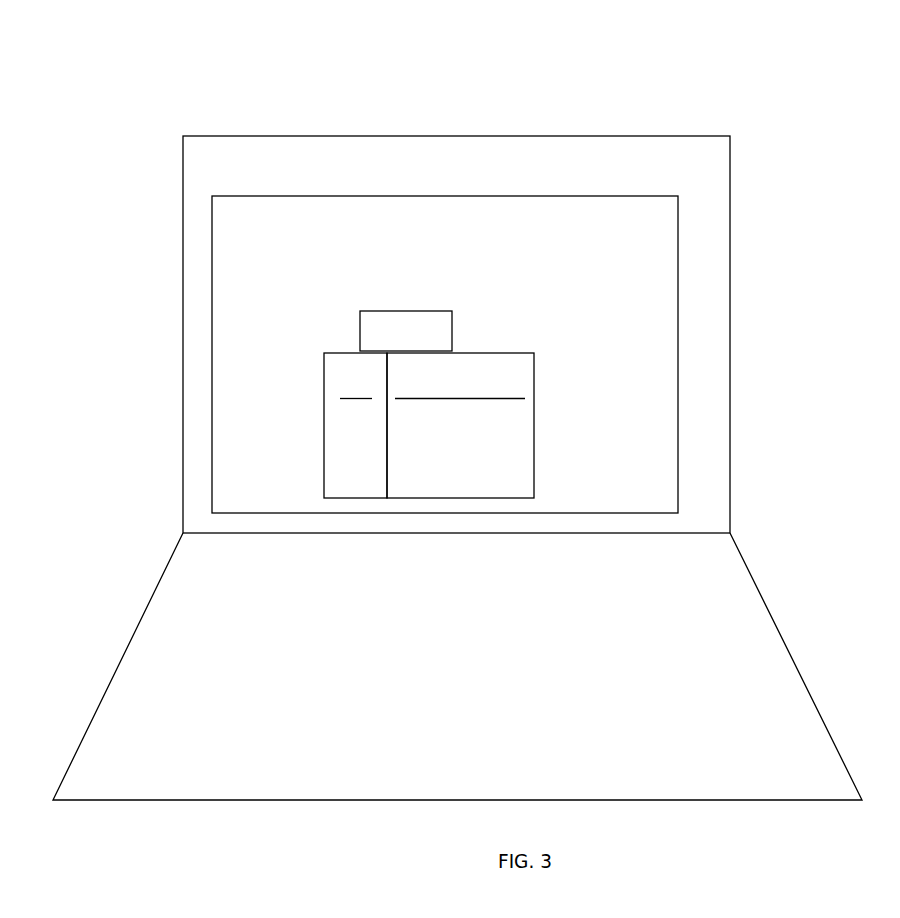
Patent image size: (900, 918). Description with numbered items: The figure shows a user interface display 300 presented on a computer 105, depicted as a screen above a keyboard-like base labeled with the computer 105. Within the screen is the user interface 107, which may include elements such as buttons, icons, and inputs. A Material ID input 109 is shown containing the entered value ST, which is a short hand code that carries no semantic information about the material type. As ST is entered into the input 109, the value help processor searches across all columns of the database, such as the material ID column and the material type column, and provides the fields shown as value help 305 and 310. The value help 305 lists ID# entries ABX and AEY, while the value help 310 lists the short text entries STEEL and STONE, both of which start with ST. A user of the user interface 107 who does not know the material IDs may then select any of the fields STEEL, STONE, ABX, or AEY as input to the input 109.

The user interface display screen 300 is at (540, 36).
The computer 105 is at (590, 730).
The user interface 107 is at (679, 235).
The input 109 is at (453, 318).
The value help 305 is at (324, 422).
The value help 310 is at (535, 410).